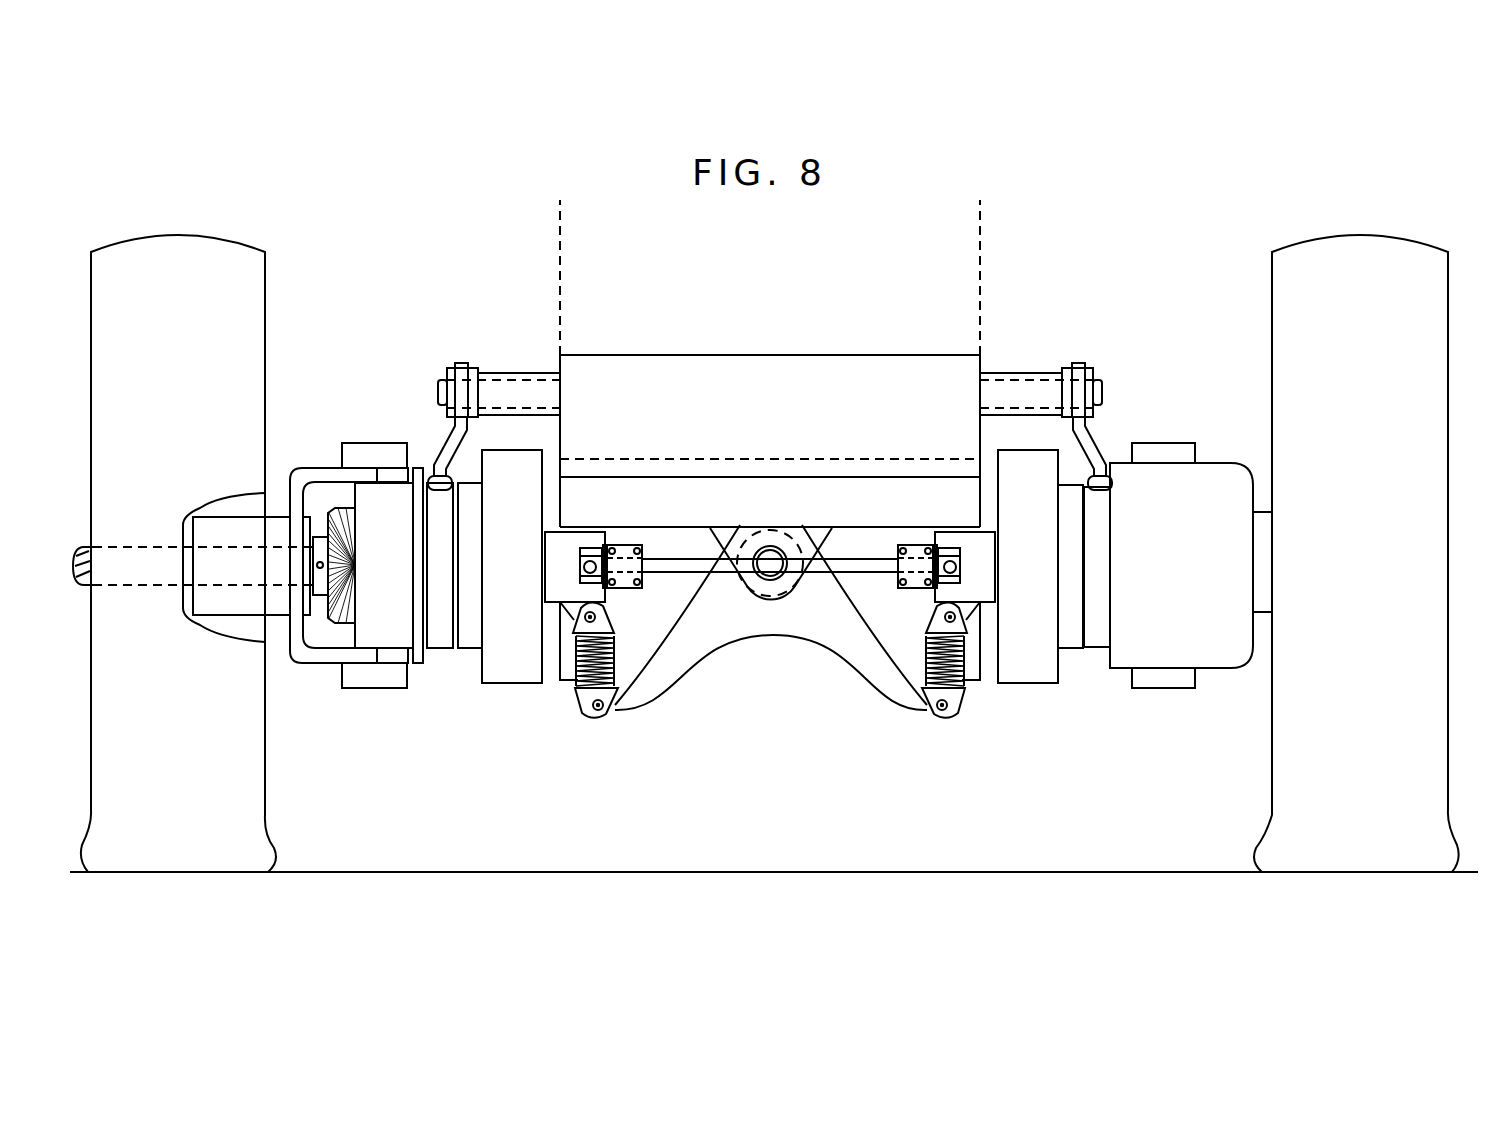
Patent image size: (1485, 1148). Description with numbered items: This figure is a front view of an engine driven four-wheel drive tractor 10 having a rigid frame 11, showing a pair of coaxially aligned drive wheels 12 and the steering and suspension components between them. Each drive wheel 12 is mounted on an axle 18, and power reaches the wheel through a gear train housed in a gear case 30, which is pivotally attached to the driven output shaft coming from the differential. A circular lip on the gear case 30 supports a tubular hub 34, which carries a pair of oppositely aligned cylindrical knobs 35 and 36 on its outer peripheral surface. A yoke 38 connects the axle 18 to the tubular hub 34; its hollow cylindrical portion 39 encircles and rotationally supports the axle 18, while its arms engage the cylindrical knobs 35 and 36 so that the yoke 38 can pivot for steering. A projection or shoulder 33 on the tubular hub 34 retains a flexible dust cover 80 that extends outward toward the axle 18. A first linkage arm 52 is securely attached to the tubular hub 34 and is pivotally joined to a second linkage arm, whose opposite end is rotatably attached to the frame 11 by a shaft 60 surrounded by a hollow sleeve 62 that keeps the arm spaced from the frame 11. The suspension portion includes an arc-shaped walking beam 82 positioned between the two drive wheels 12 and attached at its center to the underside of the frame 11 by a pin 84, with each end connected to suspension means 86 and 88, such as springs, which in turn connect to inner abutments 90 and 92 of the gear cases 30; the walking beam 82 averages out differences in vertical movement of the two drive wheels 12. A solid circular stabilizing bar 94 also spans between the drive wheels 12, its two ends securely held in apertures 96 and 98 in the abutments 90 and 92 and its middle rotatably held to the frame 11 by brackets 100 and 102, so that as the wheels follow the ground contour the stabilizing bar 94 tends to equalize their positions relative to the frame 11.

The tractor 10 is at (1085, 248).
The frame 11 is at (858, 527).
The drive wheels 12 is at (248, 247).
The axle 18 is at (127, 545).
The gear case 30 is at (525, 672).
The projection or shoulder 33 is at (420, 467).
The tubular hub 34 is at (441, 667).
The cylindrical knob 35 is at (356, 443).
The cylindrical knob 36 is at (377, 690).
The yoke 38 is at (297, 463).
The hollow cylindrical portion 39 is at (227, 497).
The first linkage arm 52 is at (462, 430).
The shaft 60 is at (533, 407).
The hollow sleeve 62 is at (495, 372).
The dust cover 80 is at (1217, 460).
The walking beam 82 is at (773, 622).
The pin 84 is at (773, 557).
The suspension means 86 is at (613, 662).
The suspension means 88 is at (930, 657).
The inner abutment 90 is at (593, 598).
The inner abutment 92 is at (940, 596).
The stabilizing bar 94 is at (676, 560).
The aperture 96 is at (580, 563).
The aperture 98 is at (962, 562).
The bracket 100 is at (629, 546).
The bracket 102 is at (917, 545).